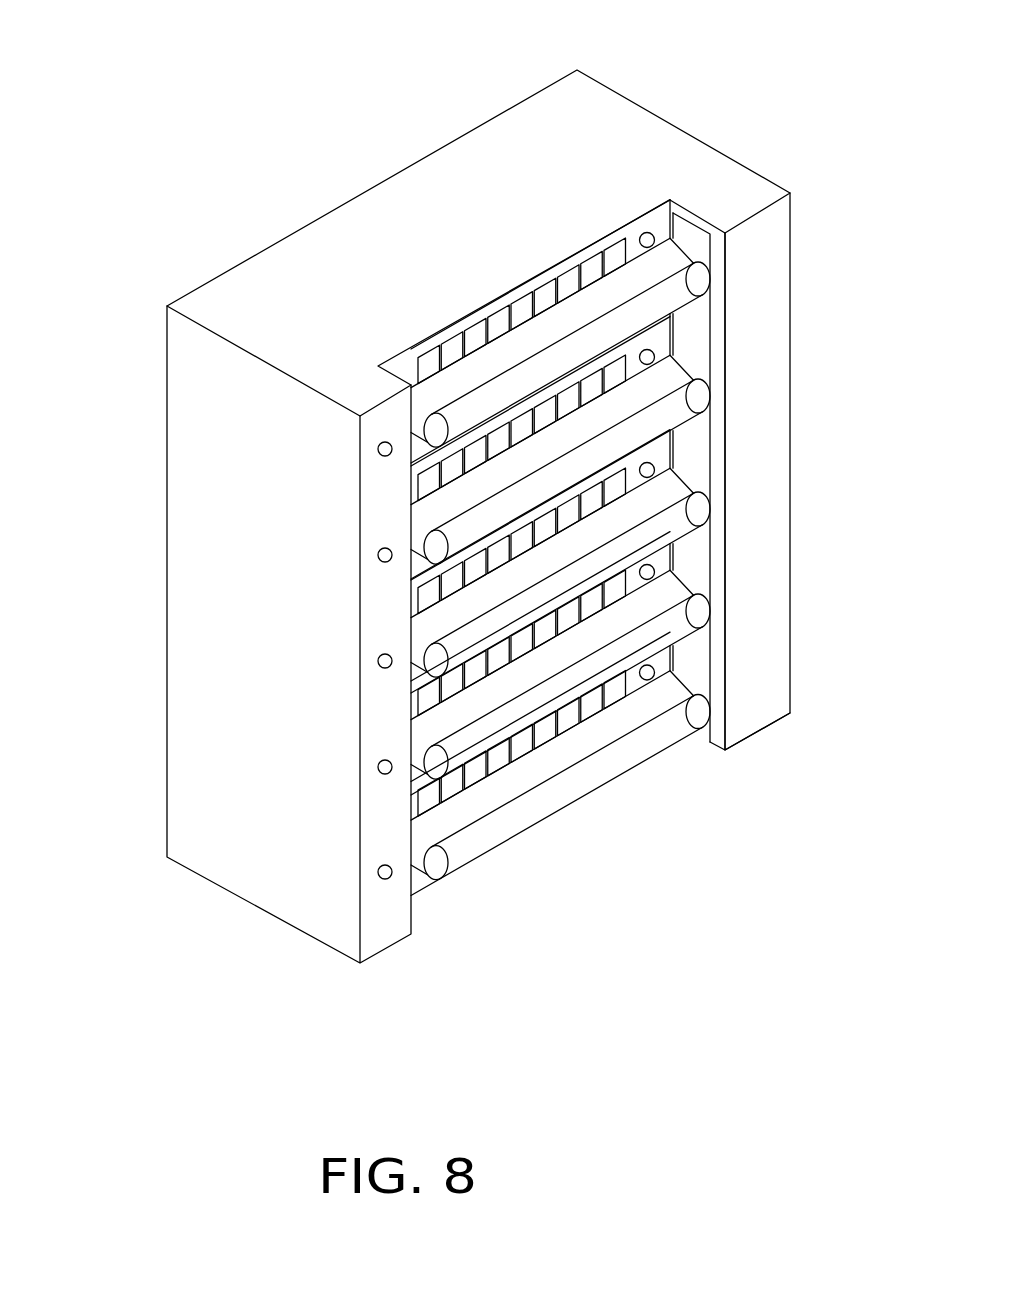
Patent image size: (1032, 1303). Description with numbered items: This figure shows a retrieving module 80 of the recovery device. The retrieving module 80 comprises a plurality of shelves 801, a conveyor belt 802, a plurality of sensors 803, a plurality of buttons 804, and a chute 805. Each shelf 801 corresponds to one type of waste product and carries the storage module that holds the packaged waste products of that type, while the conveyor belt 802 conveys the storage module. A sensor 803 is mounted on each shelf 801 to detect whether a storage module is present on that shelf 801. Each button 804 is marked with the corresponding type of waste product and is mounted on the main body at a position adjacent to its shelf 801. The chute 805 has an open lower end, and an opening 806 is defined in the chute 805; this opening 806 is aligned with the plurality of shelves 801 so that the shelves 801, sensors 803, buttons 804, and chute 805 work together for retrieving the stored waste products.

The retrieving module 80 is at (672, 788).
The shelf 801 is at (423, 455).
The conveyor belt 802 is at (632, 287).
The sensor 803 is at (648, 240).
The button 804 is at (383, 450).
The chute 805 is at (757, 300).
The opening 806 is at (698, 340).